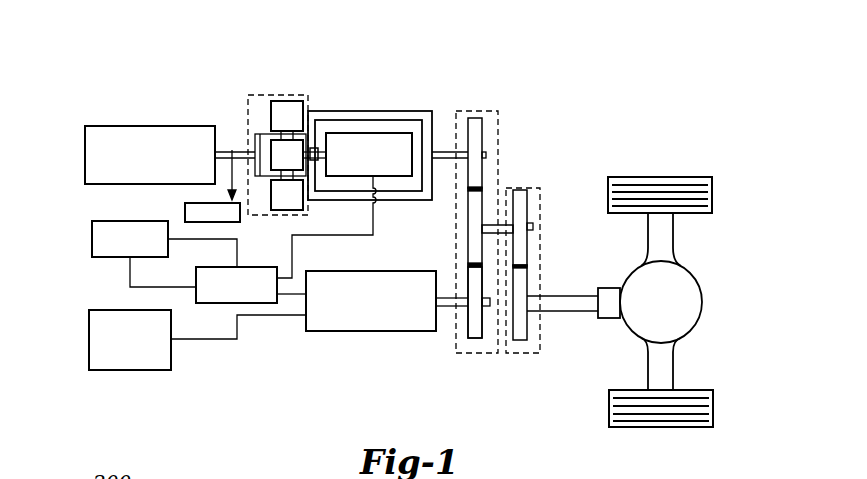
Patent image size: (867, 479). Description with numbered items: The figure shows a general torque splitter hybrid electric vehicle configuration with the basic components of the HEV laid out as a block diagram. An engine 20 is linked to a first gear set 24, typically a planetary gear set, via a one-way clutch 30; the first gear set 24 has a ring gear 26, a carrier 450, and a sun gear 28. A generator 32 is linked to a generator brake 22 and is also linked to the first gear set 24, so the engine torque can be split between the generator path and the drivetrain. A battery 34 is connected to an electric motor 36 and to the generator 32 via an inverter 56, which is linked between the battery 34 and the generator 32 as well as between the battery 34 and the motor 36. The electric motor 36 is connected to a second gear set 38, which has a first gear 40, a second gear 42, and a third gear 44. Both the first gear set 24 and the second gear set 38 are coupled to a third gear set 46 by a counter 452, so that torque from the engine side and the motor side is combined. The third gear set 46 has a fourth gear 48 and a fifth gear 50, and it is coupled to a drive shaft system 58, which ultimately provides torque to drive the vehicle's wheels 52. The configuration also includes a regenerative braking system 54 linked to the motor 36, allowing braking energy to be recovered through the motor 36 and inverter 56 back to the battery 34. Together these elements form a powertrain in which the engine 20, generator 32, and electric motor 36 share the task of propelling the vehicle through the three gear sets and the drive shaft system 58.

The engine 20 is at (180, 126).
The generator brake 22 is at (315, 150).
The first gear set 24 is at (248, 117).
The ring gear 26 is at (285, 107).
The sun gear 28 is at (287, 155).
The carrier 450 is at (263, 133).
The one-way clutch 30 is at (232, 150).
The generator 32 is at (393, 137).
The battery 34 is at (92, 233).
The electric motor 36 is at (405, 323).
The second gear set 38 is at (472, 112).
The first gear 40 is at (477, 137).
The second gear 42 is at (473, 237).
The third gear 44 is at (472, 333).
The counter 452 is at (488, 222).
The third gear set 46 is at (537, 195).
The fourth gear 48 is at (522, 215).
The fifth gear 50 is at (522, 285).
The wheels 52 is at (673, 232).
The regenerative braking system 54 is at (88, 335).
The inverter 56 is at (245, 267).
The drive shaft system 58 is at (557, 311).